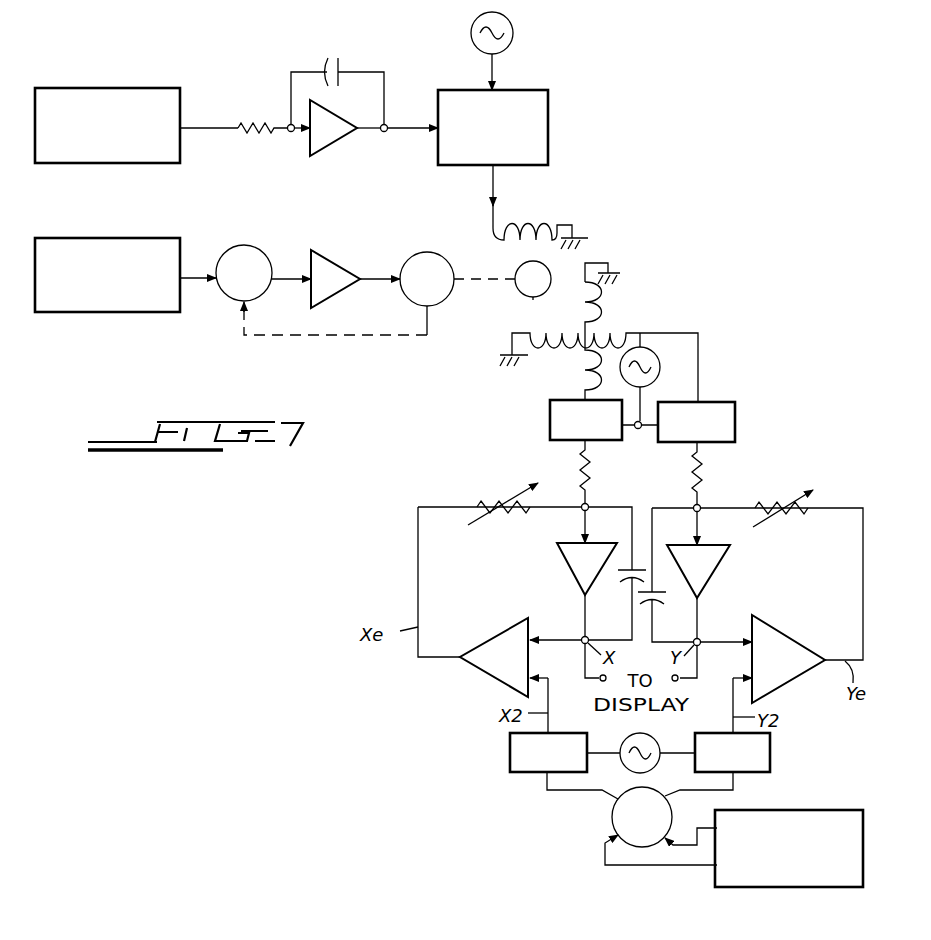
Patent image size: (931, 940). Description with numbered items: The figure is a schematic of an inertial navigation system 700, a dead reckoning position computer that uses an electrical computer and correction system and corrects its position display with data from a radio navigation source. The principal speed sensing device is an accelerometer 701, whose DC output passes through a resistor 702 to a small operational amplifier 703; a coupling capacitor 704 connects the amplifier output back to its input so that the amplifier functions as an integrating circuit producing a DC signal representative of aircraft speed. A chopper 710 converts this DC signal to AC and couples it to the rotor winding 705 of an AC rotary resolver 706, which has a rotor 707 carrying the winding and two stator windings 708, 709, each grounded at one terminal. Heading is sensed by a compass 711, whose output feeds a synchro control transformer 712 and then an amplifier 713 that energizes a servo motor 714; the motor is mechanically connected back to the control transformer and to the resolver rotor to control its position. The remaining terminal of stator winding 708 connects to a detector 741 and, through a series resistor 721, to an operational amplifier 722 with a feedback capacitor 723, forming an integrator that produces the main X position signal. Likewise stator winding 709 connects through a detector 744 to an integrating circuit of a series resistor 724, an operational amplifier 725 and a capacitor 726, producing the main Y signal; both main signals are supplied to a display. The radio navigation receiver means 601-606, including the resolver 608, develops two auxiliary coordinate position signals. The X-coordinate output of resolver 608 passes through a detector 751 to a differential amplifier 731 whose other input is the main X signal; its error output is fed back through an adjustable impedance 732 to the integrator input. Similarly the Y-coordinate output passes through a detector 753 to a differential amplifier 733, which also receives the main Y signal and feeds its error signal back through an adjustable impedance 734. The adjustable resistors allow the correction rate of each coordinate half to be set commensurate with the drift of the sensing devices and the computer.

The inertial navigation system 700 is at (612, 117).
The accelerometer 701 is at (107, 103).
The resistor 702 is at (253, 101).
The operational amplifier 703 is at (345, 137).
The coupling capacitor 704 is at (347, 79).
The rotor winding 705 is at (540, 215).
The AC rotary resolver 706 is at (491, 257).
The rotor 707 is at (502, 312).
The stator winding 708 is at (626, 331).
The stator winding 709 is at (608, 353).
The chopper 710 is at (512, 108).
The compass 711 is at (107, 300).
The synchro control transformer 712 is at (244, 254).
The amplifier 713 is at (340, 258).
The servo motor 714 is at (420, 257).
The series resistor 721 is at (613, 471).
The operational amplifier 722 is at (561, 569).
The capacitor 723 is at (617, 605).
The series resistor 724 is at (726, 473).
The operational amplifier 725 is at (724, 571).
The capacitor 726 is at (666, 575).
The differential amplifier 731 is at (485, 663).
The adjustable impedance 732 is at (503, 487).
The differential amplifier 733 is at (793, 667).
The adjustable impedance 734 is at (789, 523).
The detector 741 is at (548, 420).
The detector 744 is at (727, 419).
The detector 751 is at (510, 755).
The detector 753 is at (757, 754).
The resolver 608 is at (604, 817).
The radio navigation receiver means 601-606 is at (789, 833).